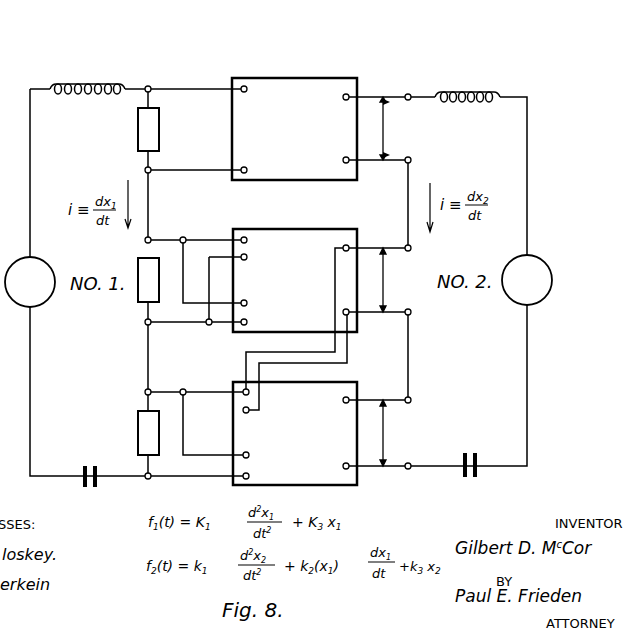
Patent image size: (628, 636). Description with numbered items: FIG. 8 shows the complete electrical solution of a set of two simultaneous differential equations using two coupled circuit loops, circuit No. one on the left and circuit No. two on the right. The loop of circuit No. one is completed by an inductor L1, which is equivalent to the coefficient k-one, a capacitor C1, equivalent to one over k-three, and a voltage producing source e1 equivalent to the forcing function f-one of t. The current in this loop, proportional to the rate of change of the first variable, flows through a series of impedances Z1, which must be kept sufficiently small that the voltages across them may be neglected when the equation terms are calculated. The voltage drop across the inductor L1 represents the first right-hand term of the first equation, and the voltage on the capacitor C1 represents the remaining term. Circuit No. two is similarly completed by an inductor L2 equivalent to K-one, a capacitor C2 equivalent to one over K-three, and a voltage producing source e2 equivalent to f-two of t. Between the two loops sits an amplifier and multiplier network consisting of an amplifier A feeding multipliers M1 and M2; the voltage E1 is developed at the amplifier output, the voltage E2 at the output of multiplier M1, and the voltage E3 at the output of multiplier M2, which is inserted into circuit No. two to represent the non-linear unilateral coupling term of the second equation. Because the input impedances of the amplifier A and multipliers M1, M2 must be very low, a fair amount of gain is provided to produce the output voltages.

The inductor L1 is at (87, 102).
The inductor L2 is at (467, 110).
The impedance Z1 is at (148, 281).
The amplifier A is at (294, 129).
The multiplier M1 is at (295, 280).
The multiplier M2 is at (295, 433).
The voltage E1 is at (383, 128).
The voltage E2 is at (383, 280).
The voltage E3 is at (383, 433).
The voltage producing source e1 is at (30, 282).
The voltage producing source e2 is at (527, 280).
The capacitor C1 is at (116, 449).
The capacitor C2 is at (494, 436).